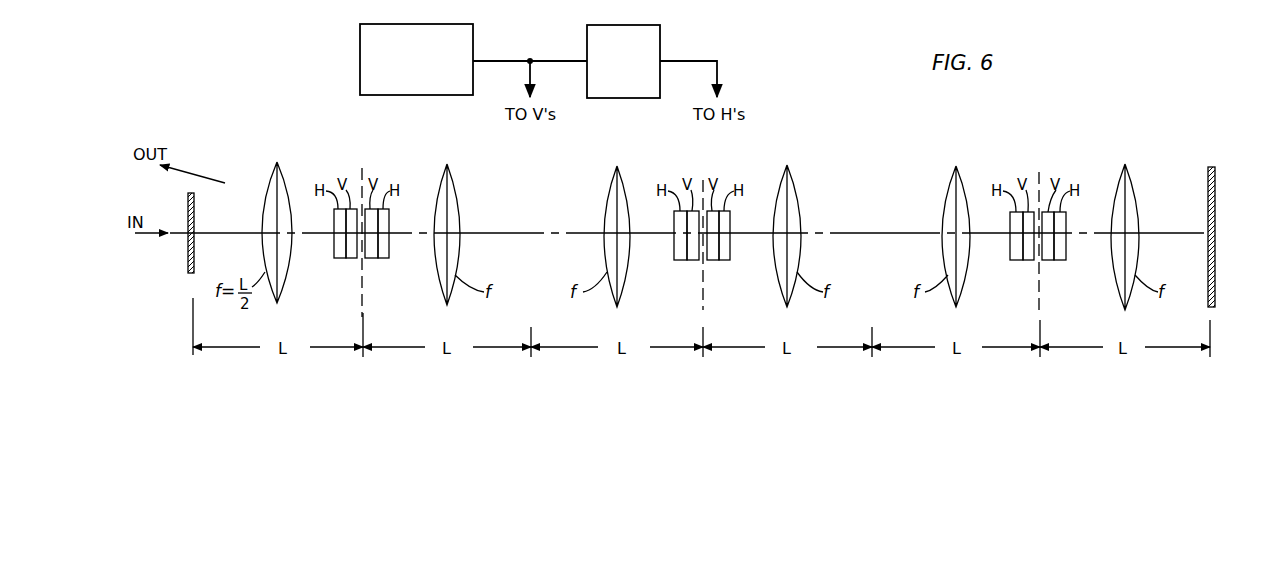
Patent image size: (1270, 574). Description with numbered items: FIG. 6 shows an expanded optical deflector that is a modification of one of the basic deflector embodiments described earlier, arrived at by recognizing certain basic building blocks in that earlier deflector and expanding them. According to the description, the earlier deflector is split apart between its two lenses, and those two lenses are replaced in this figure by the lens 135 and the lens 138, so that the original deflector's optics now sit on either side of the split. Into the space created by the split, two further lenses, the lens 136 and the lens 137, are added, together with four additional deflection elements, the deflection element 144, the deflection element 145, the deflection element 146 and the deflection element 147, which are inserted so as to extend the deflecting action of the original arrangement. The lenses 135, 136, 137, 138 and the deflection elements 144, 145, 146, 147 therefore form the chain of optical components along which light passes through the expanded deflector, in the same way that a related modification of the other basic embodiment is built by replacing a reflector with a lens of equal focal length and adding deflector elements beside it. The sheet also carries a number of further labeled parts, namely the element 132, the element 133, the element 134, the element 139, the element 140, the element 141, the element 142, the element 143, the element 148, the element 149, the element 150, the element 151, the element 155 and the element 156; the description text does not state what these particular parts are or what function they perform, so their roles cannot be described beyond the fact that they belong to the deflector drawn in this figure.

The input mirror 132 is at (188, 268).
The end mirror 133 is at (1215, 176).
The lens 134 is at (283, 175).
The lens 135 is at (452, 185).
The lens 136 is at (612, 180).
The lens 137 is at (795, 188).
The lens 138 is at (950, 185).
The lens 139 is at (1130, 185).
The electro-optic modulator cell (H) 140 is at (340, 259).
The electro-optic modulator cell (V) 141 is at (353, 259).
The electro-optic modulator cell (V) 142 is at (370, 259).
The electro-optic modulator cell (H) 143 is at (385, 259).
The deflection element 144 is at (680, 261).
The deflection element 145 is at (690, 261).
The deflection element 146 is at (712, 261).
The deflection element 147 is at (724, 261).
The electro-optic modulator cell (H) 148 is at (1016, 261).
The electro-optic modulator cell (V) 149 is at (1028, 261).
The electro-optic modulator cell (V) 150 is at (1048, 261).
The electro-optic modulator cell (H) 151 is at (1060, 261).
The synchronous modulator 155 is at (360, 38).
The 90 degree phase shifter 156 is at (587, 37).